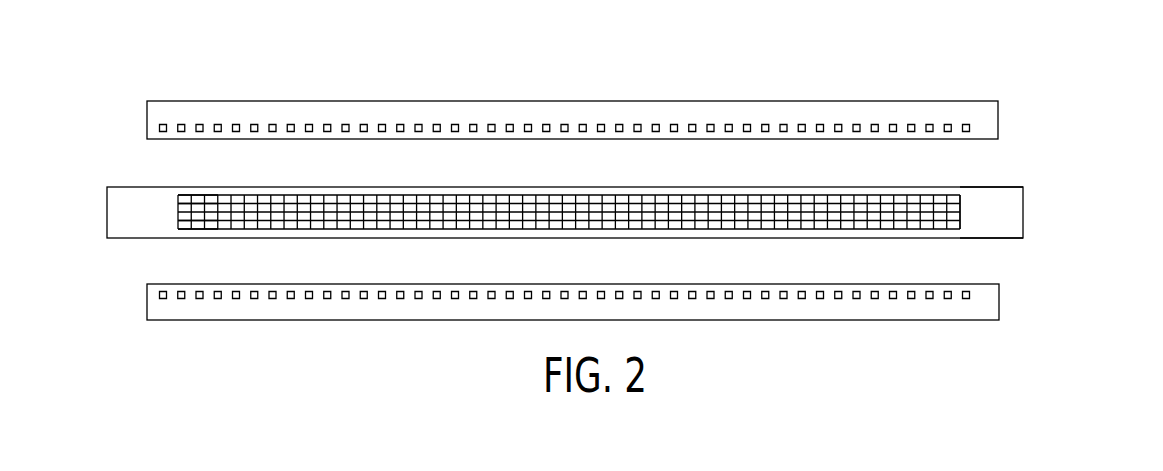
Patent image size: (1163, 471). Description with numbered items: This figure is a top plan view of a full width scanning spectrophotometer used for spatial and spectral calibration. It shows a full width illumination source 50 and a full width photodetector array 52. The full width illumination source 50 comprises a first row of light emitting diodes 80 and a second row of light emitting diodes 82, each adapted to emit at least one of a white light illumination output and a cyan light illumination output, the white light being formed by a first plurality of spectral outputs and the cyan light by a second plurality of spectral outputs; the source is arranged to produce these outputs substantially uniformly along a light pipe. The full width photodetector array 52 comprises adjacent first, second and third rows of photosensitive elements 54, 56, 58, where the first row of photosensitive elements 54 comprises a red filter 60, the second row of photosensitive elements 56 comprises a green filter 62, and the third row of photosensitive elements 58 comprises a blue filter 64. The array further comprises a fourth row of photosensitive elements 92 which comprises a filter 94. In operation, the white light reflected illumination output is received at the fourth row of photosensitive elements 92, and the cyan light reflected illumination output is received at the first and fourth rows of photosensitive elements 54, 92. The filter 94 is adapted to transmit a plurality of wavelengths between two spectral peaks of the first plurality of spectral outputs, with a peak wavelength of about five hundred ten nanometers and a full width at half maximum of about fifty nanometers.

The full width illumination source 50 is at (1050, 105).
The full width photodetector array 52 is at (1060, 213).
The first row of photosensitive elements 54 is at (177, 195).
The second row of photosensitive elements 56 is at (177, 205).
The third row of photosensitive elements 58 is at (177, 217).
The red filter 60 is at (958, 195).
The green filter 62 is at (961, 206).
The blue filter 64 is at (961, 219).
The first row of light emitting diodes 80 is at (975, 118).
The second row of light emitting diodes 82 is at (975, 305).
The fourth row of photosensitive elements 92 is at (177, 232).
The filter 94 is at (958, 230).